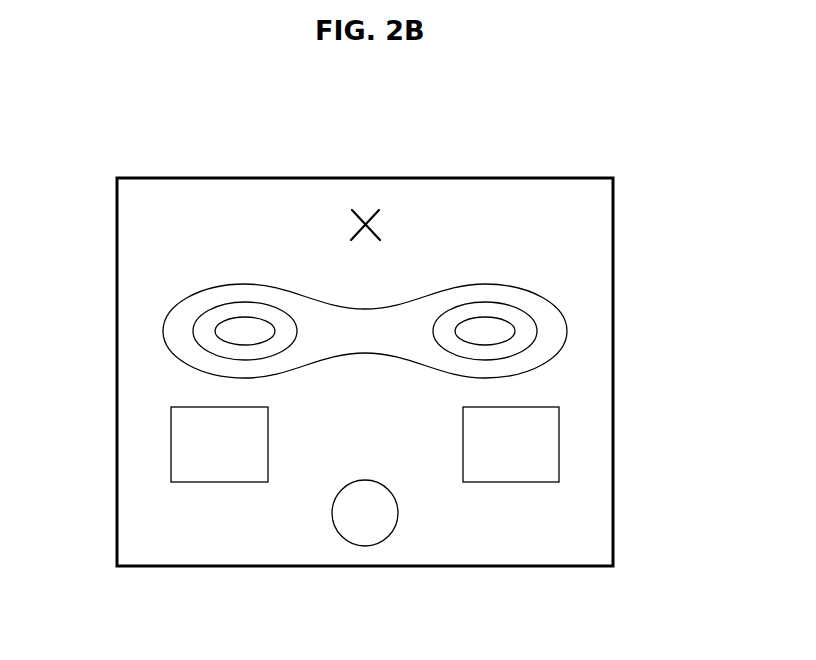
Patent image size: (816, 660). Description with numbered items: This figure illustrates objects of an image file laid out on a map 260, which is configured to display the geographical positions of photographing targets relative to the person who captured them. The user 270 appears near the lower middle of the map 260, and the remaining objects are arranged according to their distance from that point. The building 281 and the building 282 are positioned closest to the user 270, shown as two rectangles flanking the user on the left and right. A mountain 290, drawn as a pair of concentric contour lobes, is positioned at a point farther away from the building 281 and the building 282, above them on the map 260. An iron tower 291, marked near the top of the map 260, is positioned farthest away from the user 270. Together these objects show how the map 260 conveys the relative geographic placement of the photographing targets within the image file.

The map 260 is at (537, 178).
The iron tower 291 is at (361, 214).
The mountain 290 is at (567, 331).
The building 282 is at (171, 443).
The building 281 is at (559, 443).
The user 270 is at (376, 545).